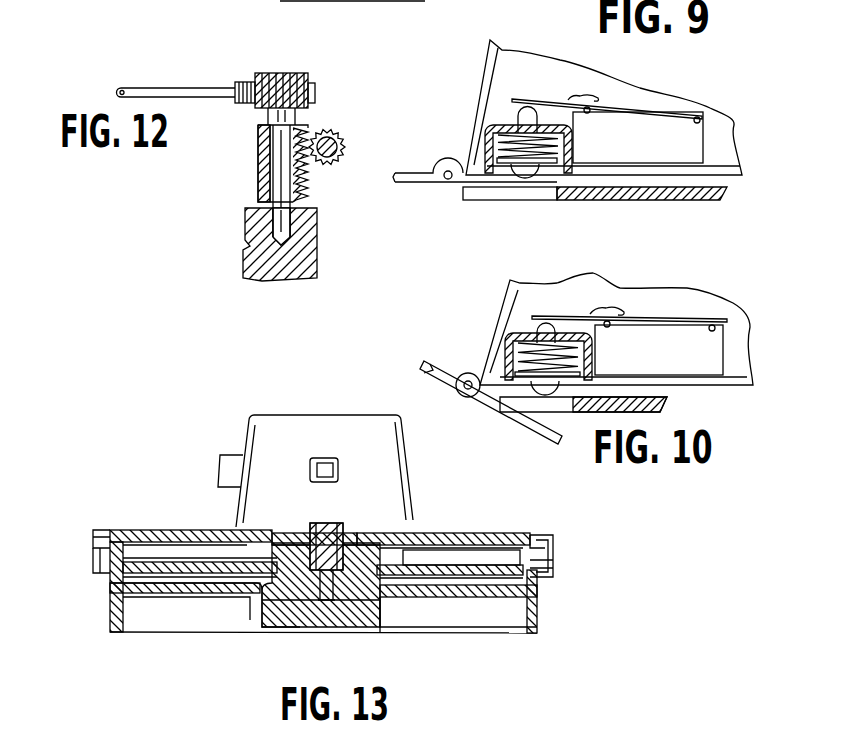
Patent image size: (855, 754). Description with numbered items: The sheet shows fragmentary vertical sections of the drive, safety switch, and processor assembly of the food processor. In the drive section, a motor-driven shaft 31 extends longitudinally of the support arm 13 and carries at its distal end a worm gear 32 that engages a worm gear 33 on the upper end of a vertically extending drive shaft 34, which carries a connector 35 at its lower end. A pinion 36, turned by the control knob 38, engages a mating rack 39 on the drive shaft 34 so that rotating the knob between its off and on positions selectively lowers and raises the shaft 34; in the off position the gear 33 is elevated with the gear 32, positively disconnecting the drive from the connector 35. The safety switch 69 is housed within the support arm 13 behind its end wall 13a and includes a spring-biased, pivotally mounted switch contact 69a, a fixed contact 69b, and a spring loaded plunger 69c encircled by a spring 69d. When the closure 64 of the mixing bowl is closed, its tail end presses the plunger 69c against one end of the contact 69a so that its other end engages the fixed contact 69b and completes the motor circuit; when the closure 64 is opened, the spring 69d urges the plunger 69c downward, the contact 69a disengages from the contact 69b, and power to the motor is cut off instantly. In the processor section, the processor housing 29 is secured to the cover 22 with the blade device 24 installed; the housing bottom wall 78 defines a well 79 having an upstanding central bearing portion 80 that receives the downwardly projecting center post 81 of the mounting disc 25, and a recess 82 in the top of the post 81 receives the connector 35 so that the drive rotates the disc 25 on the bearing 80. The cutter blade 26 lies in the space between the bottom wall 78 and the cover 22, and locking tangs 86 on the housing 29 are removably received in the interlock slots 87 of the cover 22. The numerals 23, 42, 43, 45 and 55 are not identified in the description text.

In FIG. 13, the support arm 13 is at (369, 422).
In FIG. 9, the end wall 13a is at (480, 74).
In FIG. 10, the end wall 13a is at (503, 297).
In FIG. 13, the cover 22 is at (505, 532).
In FIG. 9, the base plate 23 is at (587, 201).
In FIG. 10, the base plate 23 is at (665, 403).
In FIG. 13, the food processing blade device 24 is at (241, 603).
In FIG. 13, the mounting disc 25 is at (147, 530).
In FIG. 13, the cutter blade 26 is at (540, 533).
In FIG. 13, the processor housing 29 is at (537, 600).
In FIG. 12, the shaft 31 is at (166, 87).
In FIG. 12, the worm gear 32 is at (246, 82).
In FIG. 12, the worm gear 33 is at (282, 85).
In FIG. 12, the drive shaft 34 is at (291, 185).
In FIG. 12, the connector 35 is at (316, 240).
In FIG. 13, the connector 35 is at (343, 527).
In FIG. 12, the pinion 36 is at (345, 135).
In FIG. 13, the control knob 38 is at (222, 468).
In FIG. 12, the rack 39 is at (306, 180).
In FIG. 12, the element 42 is at (427, 1).
In FIG. 12, the element 43 is at (338, 1).
In FIG. 12, the element 45 is at (310, 13).
In FIG. 13, the top wall portion 55 is at (413, 527).
In FIG. 9, the closure 64 is at (418, 188).
In FIG. 10, the closure 64 is at (443, 365).
In FIG. 9, the safety switch 69 is at (651, 79).
In FIG. 10, the safety switch 69 is at (681, 283).
In FIG. 13, the safety switch 69 is at (324, 456).
In FIG. 9, the switch contact 69a is at (658, 107).
In FIG. 10, the switch contact 69a is at (645, 318).
In FIG. 9, the fixed contact 69b is at (700, 120).
In FIG. 10, the fixed contact 69b is at (712, 326).
In FIG. 9, the plunger 69c is at (515, 107).
In FIG. 10, the plunger 69c is at (547, 322).
In FIG. 9, the spring 69d is at (575, 147).
In FIG. 10, the spring 69d is at (573, 353).
In FIG. 13, the bottom wall 78 is at (473, 597).
In FIG. 13, the well 79 is at (395, 600).
In FIG. 13, the central bearing portion 80 is at (323, 608).
In FIG. 13, the center post 81 is at (278, 600).
In FIG. 13, the recess 82 is at (350, 527).
In FIG. 13, the locking tangs 86 is at (92, 555).
In FIG. 13, the interlock slots 87 is at (104, 545).